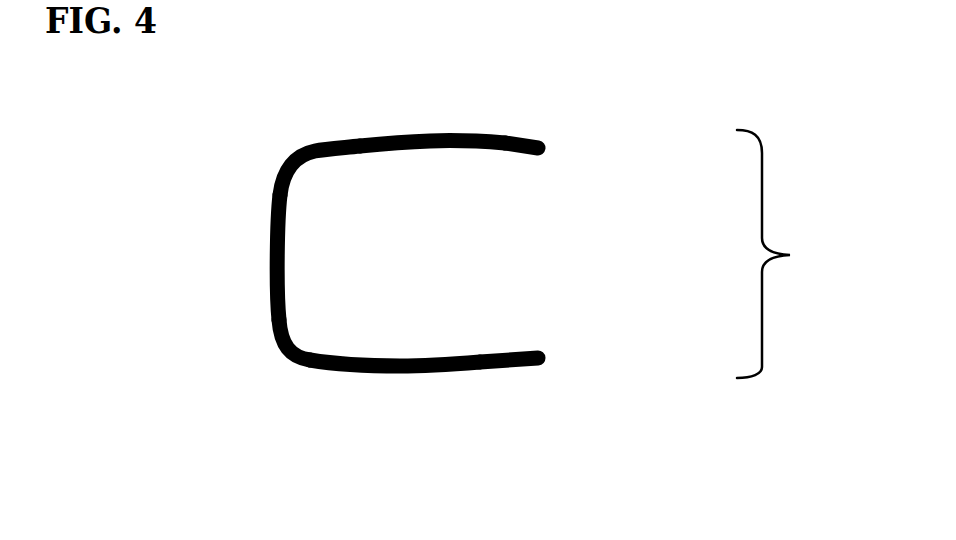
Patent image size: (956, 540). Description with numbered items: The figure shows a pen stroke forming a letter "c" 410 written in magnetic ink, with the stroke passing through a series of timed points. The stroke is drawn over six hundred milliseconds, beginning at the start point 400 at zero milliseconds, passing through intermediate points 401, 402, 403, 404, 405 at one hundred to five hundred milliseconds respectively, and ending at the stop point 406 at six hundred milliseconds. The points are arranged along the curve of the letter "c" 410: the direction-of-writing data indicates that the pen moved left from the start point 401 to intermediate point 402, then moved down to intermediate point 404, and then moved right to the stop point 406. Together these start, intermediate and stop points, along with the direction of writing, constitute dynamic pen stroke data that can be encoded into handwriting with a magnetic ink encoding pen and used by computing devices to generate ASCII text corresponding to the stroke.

The start point 400 is at (559, 133).
The intermediate point 401 is at (426, 110).
The intermediate point 402 is at (282, 141).
The intermediate point 403 is at (228, 265).
The intermediate point 404 is at (257, 369).
The intermediate point 405 is at (397, 390).
The stop point 406 is at (558, 373).
The letter c 410 is at (785, 254).